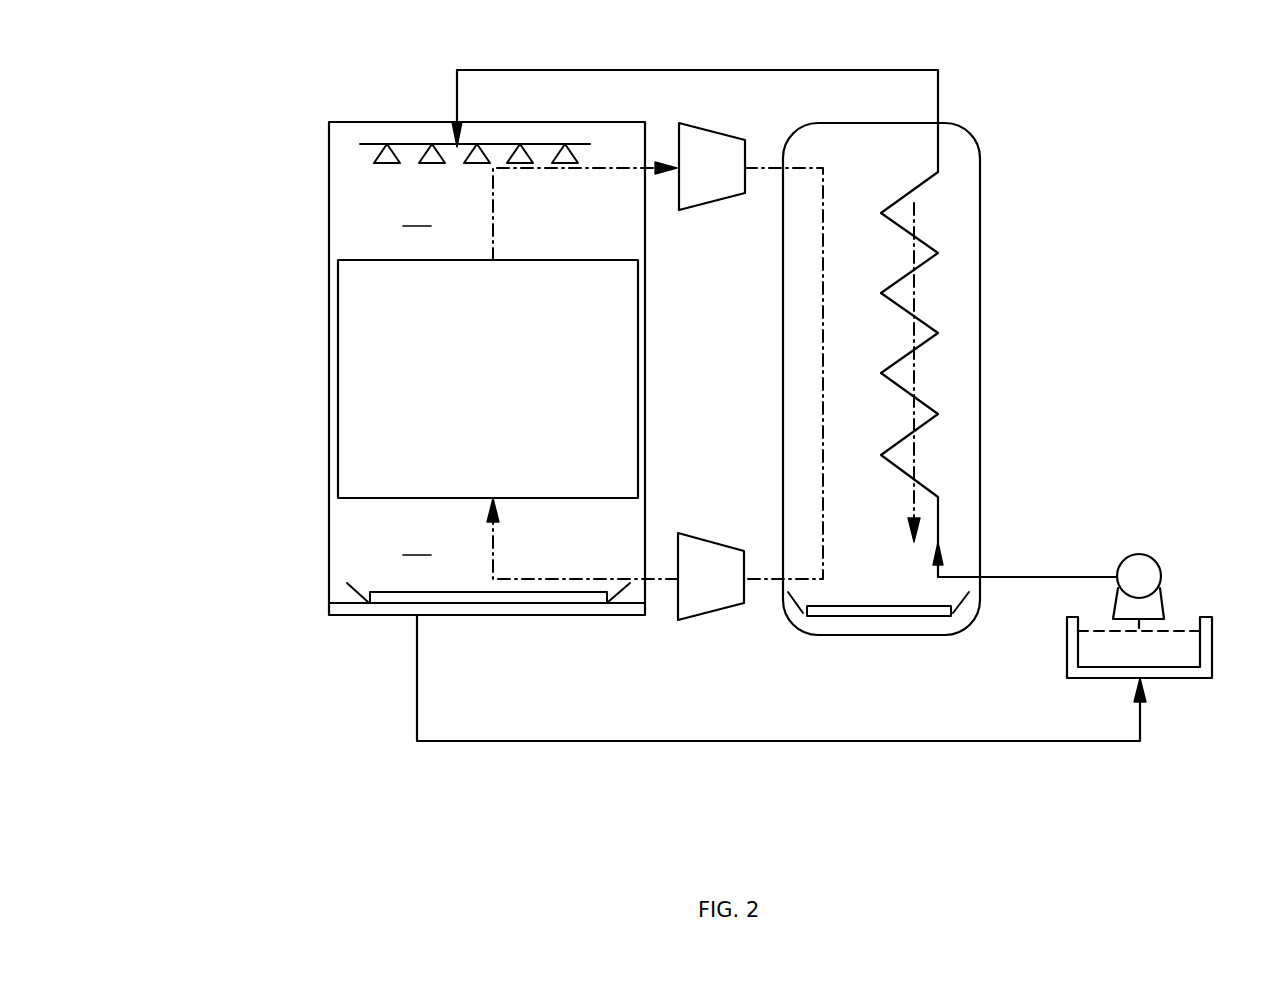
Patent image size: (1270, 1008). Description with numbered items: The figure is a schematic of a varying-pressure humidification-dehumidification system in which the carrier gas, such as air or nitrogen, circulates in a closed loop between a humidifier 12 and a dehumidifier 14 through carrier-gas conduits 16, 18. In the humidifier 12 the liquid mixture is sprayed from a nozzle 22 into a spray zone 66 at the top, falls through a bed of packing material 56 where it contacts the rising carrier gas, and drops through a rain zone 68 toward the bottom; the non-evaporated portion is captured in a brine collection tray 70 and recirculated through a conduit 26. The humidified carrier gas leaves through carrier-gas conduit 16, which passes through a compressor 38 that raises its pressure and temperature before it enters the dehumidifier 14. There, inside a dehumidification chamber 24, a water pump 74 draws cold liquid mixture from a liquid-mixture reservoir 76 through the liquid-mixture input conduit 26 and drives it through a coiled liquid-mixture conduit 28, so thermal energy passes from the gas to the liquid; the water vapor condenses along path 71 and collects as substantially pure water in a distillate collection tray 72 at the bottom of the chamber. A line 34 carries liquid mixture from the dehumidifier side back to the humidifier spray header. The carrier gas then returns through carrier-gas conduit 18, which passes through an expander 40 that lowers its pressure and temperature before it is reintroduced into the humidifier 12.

The humidifier 12 is at (391, 370).
The dehumidifier 14 is at (1016, 425).
The carrier-gas conduit 16 is at (609, 167).
The carrier-gas conduit 18 is at (767, 580).
The nozzle 22 is at (432, 147).
The dehumidification chamber 24 is at (968, 210).
The liquid-mixture input conduit 26 is at (808, 742).
The coiled liquid-mixture conduit 28 is at (920, 347).
The regenerated liquid line 34 is at (797, 70).
The compressor 38 is at (690, 210).
The expander 40 is at (700, 538).
The packing material 56 is at (478, 400).
The spray zone 66 is at (417, 215).
The rain zone 68 is at (417, 544).
The brine collection tray 70 is at (533, 605).
The condensation path 71 is at (918, 293).
The distillate collection tray 72 is at (887, 617).
The water pump 74 is at (1150, 555).
The liquid-mixture reservoir 76 is at (1163, 655).